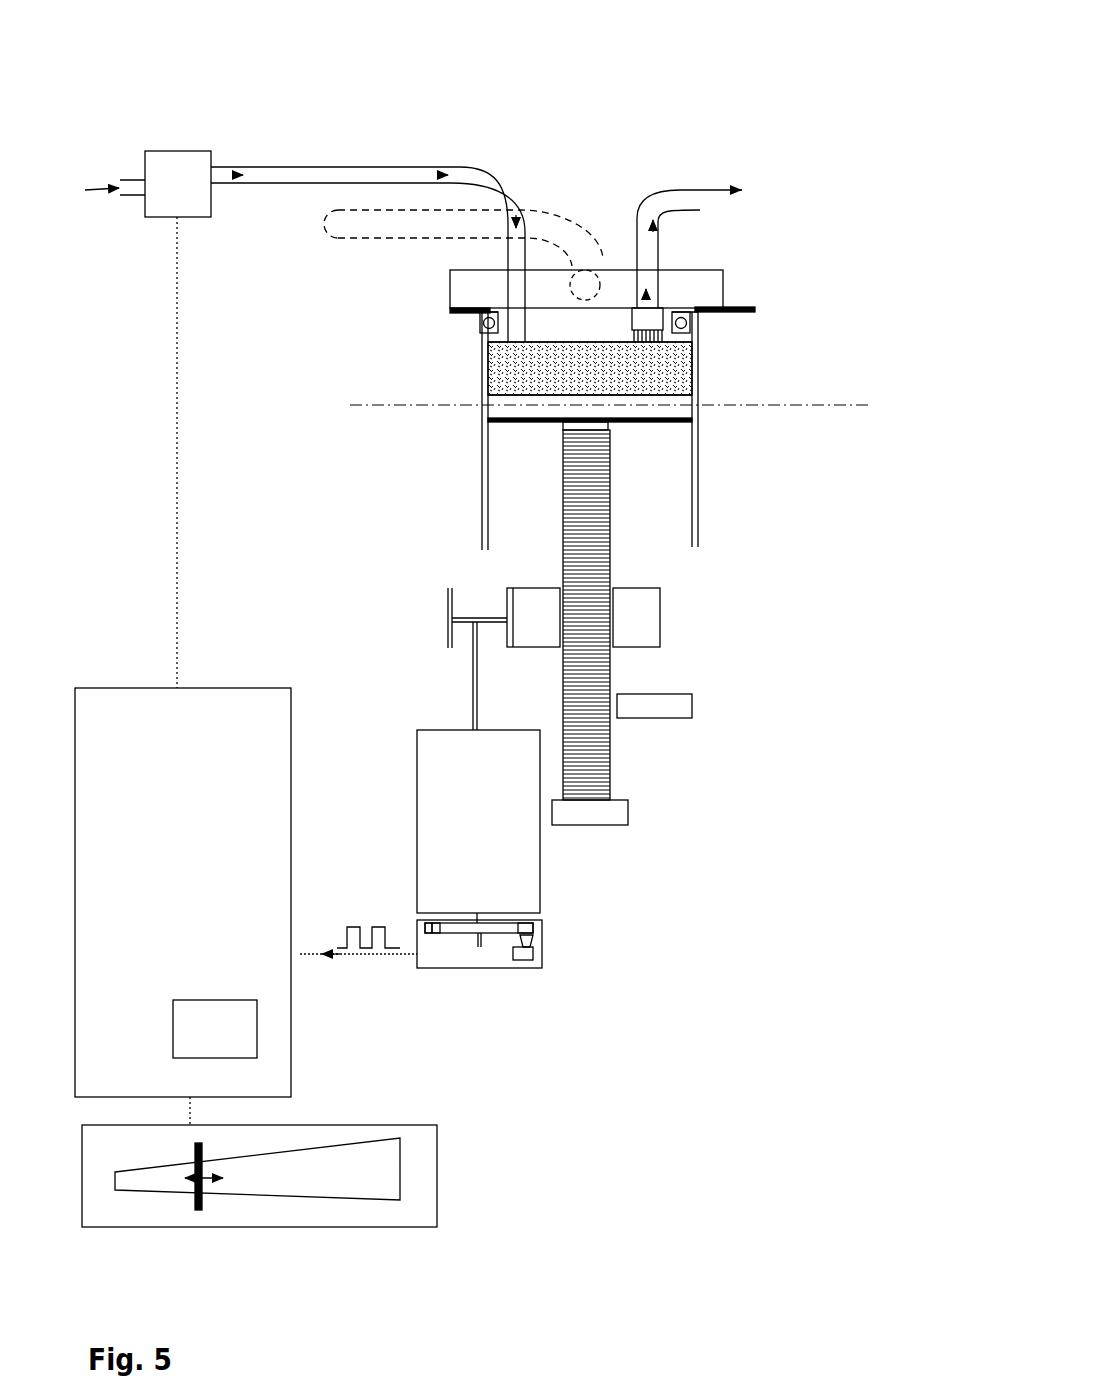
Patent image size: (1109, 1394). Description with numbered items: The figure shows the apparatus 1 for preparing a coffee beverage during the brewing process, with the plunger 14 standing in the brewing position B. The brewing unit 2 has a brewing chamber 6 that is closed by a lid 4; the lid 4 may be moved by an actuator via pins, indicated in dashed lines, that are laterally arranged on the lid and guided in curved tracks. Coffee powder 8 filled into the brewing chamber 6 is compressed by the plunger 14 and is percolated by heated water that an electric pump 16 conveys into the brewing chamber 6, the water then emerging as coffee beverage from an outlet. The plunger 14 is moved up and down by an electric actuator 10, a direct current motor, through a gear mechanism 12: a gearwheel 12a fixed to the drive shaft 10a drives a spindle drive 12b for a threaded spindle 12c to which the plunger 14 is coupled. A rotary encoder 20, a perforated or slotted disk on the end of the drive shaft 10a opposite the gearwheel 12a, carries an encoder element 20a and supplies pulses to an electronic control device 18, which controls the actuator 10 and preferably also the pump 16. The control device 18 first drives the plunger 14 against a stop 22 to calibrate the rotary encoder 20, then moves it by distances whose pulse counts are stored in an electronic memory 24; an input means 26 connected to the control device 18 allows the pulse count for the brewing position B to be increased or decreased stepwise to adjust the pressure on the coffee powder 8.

The apparatus 1 is at (659, 112).
The brewing unit 2 is at (709, 435).
The lid 4 is at (468, 288).
The brewing chamber 6 is at (487, 355).
The coffee powder 8 is at (698, 351).
The electric actuator 10 is at (403, 718).
The drive shaft 10a is at (477, 680).
The gear mechanism 12 is at (698, 620).
The gearwheel 12a is at (447, 600).
The spindle drive 12b is at (657, 630).
The threaded spindle 12c is at (612, 532).
The plunger 14 is at (723, 273).
The electric pump 16 is at (190, 162).
The electronic control device 18 is at (125, 725).
The rotary encoder 20 is at (545, 948).
The encoder strip 20a is at (453, 930).
The stop 22 is at (670, 707).
The electronic memory 24 is at (215, 1029).
The input means 26 is at (255, 1210).
The brewing position B is at (858, 408).